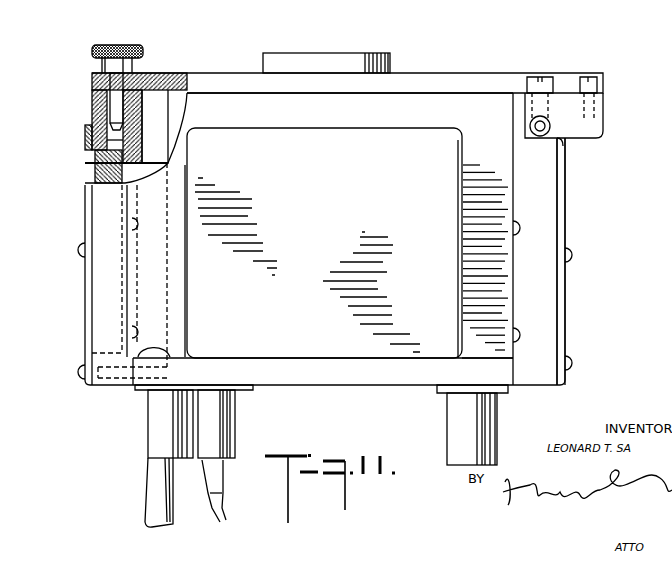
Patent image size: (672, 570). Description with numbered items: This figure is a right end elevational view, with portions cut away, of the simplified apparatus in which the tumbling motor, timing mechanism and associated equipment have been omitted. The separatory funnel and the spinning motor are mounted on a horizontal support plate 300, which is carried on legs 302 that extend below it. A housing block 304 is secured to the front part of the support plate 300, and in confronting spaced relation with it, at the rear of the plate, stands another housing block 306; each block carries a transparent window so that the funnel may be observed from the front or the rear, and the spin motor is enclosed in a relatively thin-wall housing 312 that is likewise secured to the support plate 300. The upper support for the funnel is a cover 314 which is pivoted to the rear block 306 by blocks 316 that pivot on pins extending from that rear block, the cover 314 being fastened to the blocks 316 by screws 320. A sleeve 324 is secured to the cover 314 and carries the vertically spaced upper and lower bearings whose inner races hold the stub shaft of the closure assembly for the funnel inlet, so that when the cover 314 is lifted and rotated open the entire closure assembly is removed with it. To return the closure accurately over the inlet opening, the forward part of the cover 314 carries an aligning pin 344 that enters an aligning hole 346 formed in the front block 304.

The horizontal support plate 300 is at (325, 383).
The legs 302 is at (153, 492).
The housing block 304 is at (98, 312).
The housing block 306 is at (547, 192).
The thin-wall housing 312 is at (347, 240).
The cover 314 is at (470, 75).
The blocks 316 is at (603, 120).
The screws 320 is at (603, 73).
The sleeve 324 is at (390, 56).
The aligning pin 344 is at (125, 74).
The aligning hole 346 is at (107, 135).